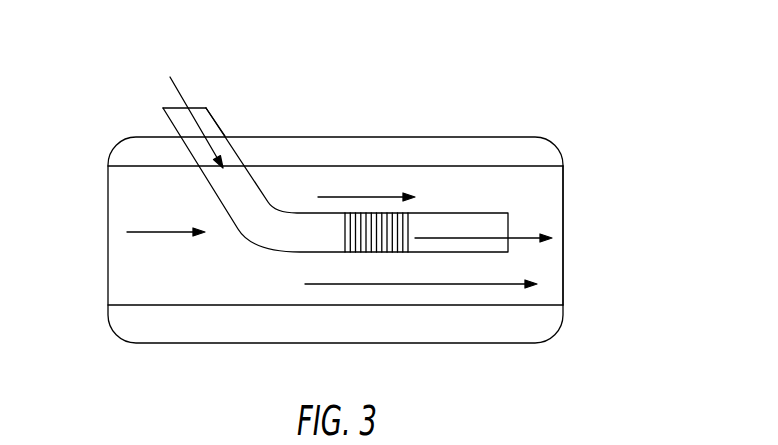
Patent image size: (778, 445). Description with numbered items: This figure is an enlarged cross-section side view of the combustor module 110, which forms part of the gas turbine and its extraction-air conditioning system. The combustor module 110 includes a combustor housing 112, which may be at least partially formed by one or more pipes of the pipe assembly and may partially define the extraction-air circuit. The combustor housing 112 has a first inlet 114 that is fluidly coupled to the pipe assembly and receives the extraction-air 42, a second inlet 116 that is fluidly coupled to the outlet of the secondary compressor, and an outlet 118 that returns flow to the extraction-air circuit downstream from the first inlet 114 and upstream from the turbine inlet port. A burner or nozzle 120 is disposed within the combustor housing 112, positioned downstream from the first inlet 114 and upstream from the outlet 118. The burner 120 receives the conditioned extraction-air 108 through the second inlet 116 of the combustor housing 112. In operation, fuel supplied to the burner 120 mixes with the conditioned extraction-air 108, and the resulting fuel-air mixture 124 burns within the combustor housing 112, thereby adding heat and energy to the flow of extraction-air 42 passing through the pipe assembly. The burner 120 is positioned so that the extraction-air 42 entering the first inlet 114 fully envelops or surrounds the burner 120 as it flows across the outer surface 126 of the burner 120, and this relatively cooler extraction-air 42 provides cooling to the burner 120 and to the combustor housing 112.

The extraction-air 42 is at (157, 233).
The conditioned extraction-air 108 is at (173, 87).
The combustor module 110 is at (462, 118).
The combustor housing 112 is at (313, 153).
The first inlet 114 is at (116, 263).
The second inlet 116 is at (225, 136).
The outlet 118 is at (565, 182).
The burner 120 is at (400, 215).
The fuel-air mixture 124 is at (524, 237).
The outer surface 126 is at (450, 253).